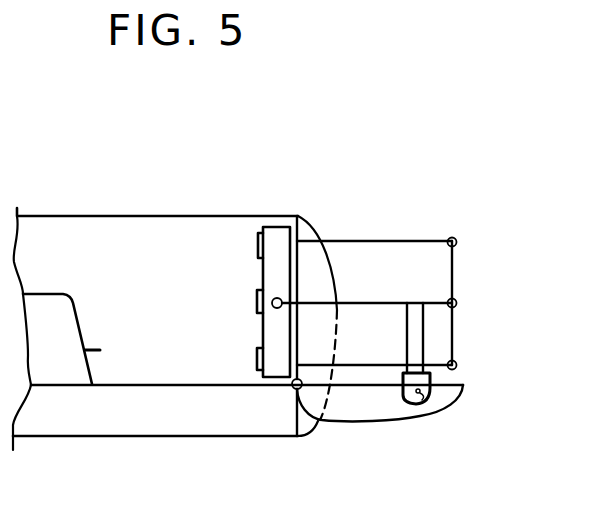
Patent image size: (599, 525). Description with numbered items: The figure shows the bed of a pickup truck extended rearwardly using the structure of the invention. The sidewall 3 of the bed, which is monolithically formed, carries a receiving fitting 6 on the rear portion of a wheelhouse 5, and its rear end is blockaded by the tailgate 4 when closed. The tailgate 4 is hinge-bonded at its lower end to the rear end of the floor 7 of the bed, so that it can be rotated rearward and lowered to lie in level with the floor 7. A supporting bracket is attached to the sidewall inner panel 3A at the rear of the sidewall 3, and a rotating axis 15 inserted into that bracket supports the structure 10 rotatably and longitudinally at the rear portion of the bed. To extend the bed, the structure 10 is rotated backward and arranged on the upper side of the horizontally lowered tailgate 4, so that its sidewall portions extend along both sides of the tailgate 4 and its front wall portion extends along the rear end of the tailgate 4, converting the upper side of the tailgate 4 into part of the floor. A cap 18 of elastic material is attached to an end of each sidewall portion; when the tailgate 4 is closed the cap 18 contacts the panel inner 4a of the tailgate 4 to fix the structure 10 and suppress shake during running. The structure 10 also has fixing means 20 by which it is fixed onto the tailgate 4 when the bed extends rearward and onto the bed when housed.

The sidewall 3 is at (143, 216).
The sidewall inner panel 3A is at (262, 328).
The tailgate 4 is at (373, 425).
The panel inner 4a is at (373, 384).
The wheelhouse 5 is at (46, 293).
The receiving fitting 6 is at (96, 349).
The floor 7 is at (135, 385).
The structure 10 is at (397, 240).
The rotating axis 15 is at (273, 287).
The cap 18 is at (257, 247).
The fixing means 20 is at (425, 337).